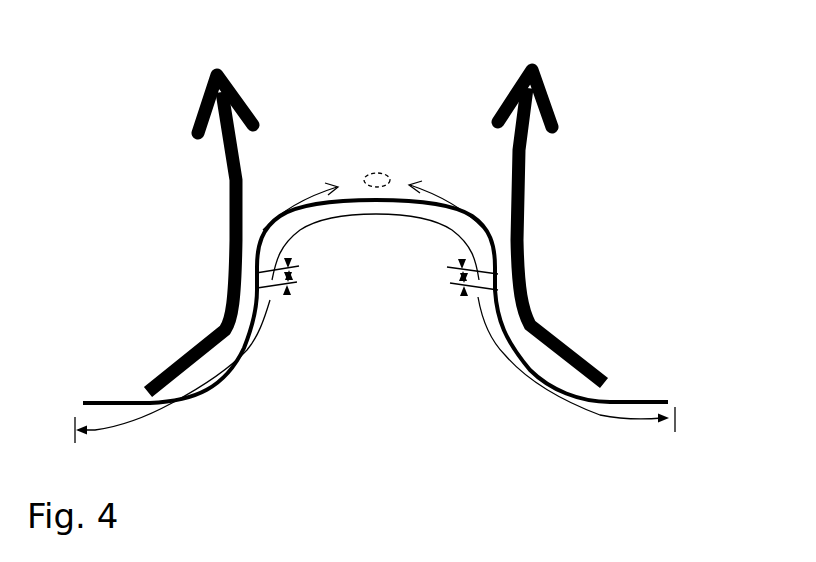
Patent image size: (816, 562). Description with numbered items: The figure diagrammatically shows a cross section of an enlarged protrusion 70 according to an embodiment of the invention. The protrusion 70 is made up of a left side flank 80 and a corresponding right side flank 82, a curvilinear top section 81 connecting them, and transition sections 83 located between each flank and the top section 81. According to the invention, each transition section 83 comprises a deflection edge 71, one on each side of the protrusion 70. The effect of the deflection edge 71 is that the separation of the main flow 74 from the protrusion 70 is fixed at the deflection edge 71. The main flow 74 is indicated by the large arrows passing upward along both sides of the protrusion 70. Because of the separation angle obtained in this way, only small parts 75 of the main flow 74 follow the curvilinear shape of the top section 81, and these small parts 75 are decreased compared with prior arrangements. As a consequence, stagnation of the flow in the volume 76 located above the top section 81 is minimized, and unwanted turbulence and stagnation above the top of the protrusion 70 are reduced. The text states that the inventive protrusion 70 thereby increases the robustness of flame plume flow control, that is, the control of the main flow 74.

The protrusion 70 is at (621, 113).
The deflection edge 71 is at (254, 275).
The main flow 74 is at (228, 262).
The small parts of the main flow 75 is at (298, 193).
The volume above the top section 76 is at (372, 168).
The left side flank 80 is at (172, 372).
The top section 81 is at (375, 247).
The right side flank 82 is at (576, 364).
The transition sections 83 is at (453, 283).